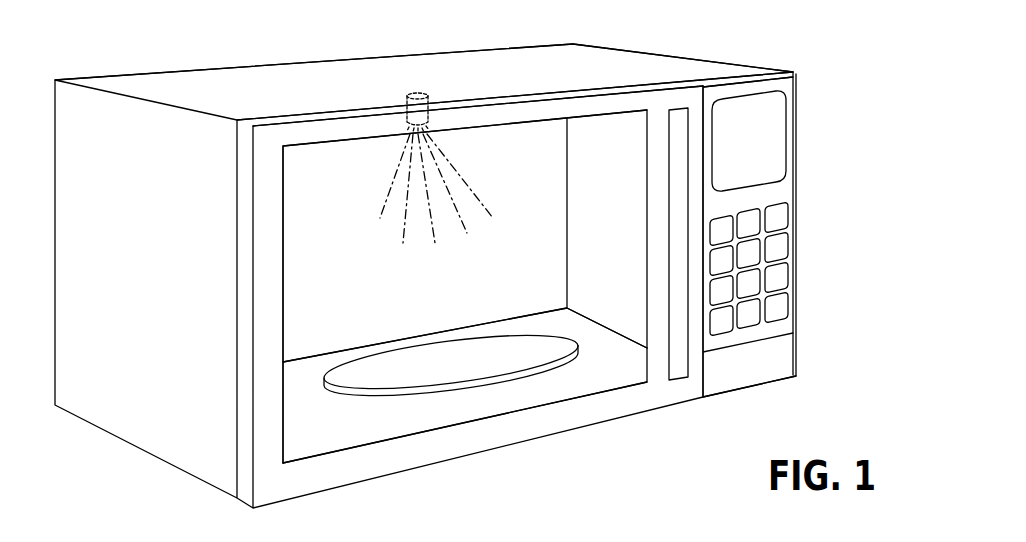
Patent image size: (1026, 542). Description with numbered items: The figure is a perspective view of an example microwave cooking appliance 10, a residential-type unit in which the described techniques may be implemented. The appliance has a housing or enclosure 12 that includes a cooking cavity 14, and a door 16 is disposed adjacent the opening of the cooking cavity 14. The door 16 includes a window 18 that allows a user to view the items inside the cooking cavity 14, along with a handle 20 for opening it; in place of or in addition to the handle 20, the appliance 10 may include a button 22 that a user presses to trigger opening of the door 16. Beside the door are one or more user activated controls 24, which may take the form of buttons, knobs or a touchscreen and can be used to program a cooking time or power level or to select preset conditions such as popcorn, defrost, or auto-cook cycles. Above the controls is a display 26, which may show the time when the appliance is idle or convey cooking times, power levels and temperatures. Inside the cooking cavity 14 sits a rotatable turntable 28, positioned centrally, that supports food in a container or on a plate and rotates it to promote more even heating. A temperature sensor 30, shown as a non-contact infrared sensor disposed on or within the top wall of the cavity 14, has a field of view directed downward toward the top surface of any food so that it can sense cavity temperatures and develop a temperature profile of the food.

The microwave cooking appliance 10 is at (88, 50).
The housing 12 is at (333, 63).
The cooking cavity 14 is at (541, 302).
The door 16 is at (493, 110).
The window 18 is at (347, 160).
The handle 20 is at (680, 250).
The button 22 is at (775, 362).
The user activated controls 24 is at (775, 250).
The display 26 is at (758, 130).
The turntable 28 is at (437, 347).
The temperature sensor 30 is at (418, 100).